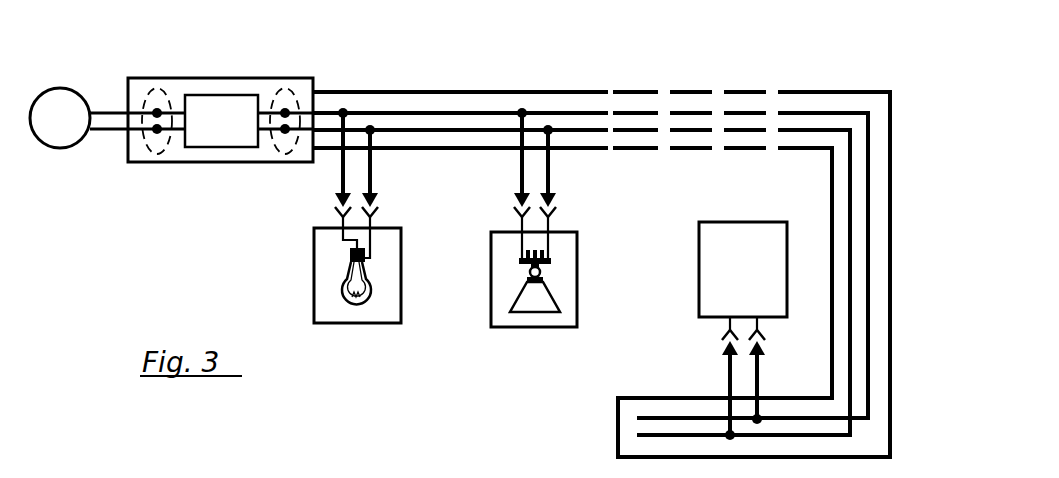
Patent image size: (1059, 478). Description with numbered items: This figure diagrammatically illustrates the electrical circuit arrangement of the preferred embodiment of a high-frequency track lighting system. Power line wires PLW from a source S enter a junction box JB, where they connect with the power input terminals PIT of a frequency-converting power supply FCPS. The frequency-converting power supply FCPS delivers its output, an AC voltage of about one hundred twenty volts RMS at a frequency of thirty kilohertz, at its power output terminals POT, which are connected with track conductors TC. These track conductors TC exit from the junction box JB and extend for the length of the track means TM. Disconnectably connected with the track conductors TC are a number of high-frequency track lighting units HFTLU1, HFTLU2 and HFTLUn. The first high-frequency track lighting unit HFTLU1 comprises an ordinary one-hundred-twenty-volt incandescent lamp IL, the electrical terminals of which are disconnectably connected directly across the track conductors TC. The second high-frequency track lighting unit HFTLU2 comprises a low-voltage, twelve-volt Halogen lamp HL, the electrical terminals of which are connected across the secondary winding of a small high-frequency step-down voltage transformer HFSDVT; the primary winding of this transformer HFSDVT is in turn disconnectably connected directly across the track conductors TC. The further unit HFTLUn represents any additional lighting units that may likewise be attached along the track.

The source S is at (68, 131).
The power line wires PLW is at (127, 131).
The junction box JB is at (222, 73).
The power input terminals PIT is at (158, 88).
The frequency-converting power supply FCPS is at (251, 131).
The power output terminals POT is at (285, 88).
The track conductors TC is at (438, 130).
The track means TM is at (508, 90).
The high-frequency track lighting unit HFTLU1 is at (312, 256).
The incandescent lamp IL is at (370, 291).
The high-frequency track lighting unit HFTLU2 is at (489, 252).
The high-frequency step-down voltage transformer HFSDVT is at (548, 261).
The Halogen lamp HL is at (548, 291).
The high-frequency track lighting unit HFTLUn is at (697, 300).